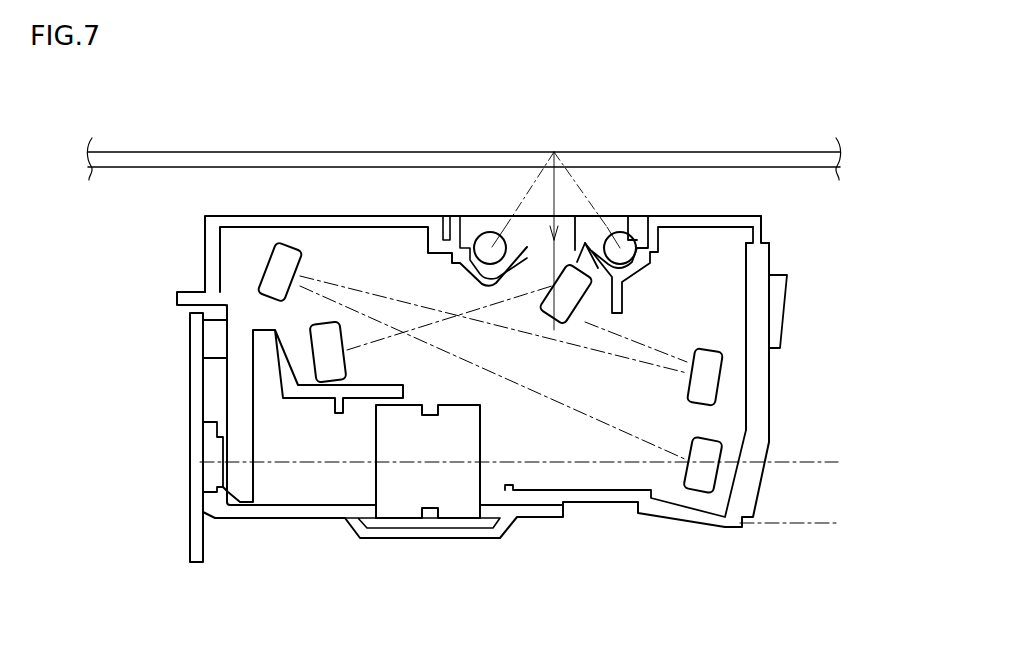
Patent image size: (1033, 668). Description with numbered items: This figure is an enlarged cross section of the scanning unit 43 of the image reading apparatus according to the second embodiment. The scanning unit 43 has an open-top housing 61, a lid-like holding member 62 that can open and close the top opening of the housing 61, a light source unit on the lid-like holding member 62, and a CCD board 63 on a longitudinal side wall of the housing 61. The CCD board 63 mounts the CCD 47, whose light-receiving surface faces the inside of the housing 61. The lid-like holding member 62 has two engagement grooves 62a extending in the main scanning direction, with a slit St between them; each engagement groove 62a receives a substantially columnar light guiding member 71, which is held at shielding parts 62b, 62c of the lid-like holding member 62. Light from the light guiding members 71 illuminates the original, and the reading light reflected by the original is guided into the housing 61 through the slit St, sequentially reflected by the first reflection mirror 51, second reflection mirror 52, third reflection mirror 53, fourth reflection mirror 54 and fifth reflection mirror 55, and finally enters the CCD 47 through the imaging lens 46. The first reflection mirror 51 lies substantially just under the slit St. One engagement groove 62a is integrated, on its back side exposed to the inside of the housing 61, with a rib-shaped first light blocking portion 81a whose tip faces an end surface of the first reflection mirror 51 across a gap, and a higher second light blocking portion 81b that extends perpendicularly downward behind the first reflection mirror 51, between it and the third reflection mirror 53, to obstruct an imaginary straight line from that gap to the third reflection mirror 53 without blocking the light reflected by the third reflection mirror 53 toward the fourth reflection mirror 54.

The scanning unit 43 is at (280, 548).
The imaging lens 46 is at (458, 502).
The CCD 47 is at (213, 463).
The first reflection mirror 51 is at (600, 325).
The second reflection mirror 52 is at (327, 365).
The third reflection mirror 53 is at (707, 385).
The fourth reflection mirror 54 is at (273, 265).
The fifth reflection mirror 55 is at (700, 482).
The housing 61 is at (757, 423).
The lid-like holding member 62 is at (245, 215).
The engagement groove 62a is at (468, 230).
The shielding part 62b is at (708, 222).
The shielding part 62c is at (330, 222).
The CCD board 63 is at (196, 540).
The light guiding member 71 is at (490, 235).
The first light blocking portion 81a is at (580, 258).
The second light blocking portion 81b is at (620, 308).
The slit St is at (548, 228).